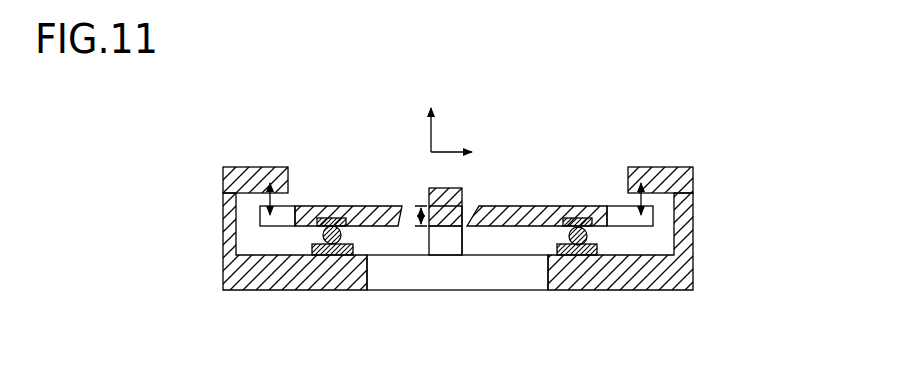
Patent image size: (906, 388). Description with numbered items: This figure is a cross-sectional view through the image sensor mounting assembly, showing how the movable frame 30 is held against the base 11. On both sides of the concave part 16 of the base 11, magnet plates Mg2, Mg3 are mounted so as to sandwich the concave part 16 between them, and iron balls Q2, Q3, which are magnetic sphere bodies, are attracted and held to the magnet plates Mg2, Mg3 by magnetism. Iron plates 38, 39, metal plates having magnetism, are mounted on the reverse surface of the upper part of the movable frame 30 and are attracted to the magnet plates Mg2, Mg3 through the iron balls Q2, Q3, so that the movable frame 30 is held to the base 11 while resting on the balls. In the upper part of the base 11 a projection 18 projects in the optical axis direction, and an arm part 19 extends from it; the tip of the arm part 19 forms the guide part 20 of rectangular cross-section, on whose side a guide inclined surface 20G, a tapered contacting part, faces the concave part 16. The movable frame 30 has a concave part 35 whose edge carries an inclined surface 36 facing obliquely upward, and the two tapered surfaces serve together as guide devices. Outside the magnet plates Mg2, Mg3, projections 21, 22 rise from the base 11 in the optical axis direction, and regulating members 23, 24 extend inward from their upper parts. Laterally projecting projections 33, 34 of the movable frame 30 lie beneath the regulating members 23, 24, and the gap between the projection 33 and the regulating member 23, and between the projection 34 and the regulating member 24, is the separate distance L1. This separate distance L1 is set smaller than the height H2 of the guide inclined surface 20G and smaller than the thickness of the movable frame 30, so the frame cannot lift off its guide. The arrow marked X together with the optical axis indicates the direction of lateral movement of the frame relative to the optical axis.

The base 11 is at (472, 228).
The concave part 16 is at (530, 275).
The projection 18 is at (441, 243).
The arm part 19 is at (452, 188).
The guide part 20 is at (456, 246).
The guide inclined surface 20G is at (462, 230).
The projection 21 is at (223, 238).
The projection 22 is at (693, 230).
The regulating member 23 is at (262, 167).
The regulating member 24 is at (670, 167).
The movable frame 30 is at (323, 218).
The projection 33 is at (278, 218).
The projection 34 is at (627, 208).
The concave part 35 is at (403, 205).
The inclined surface 36 is at (560, 174).
The iron plate 38 is at (320, 217).
The iron plate 39 is at (572, 218).
The magnet plate Mg2 is at (312, 250).
The magnet plate Mg3 is at (568, 252).
The iron ball Q2 is at (323, 242).
The iron ball Q3 is at (590, 240).
The separate distance L1 is at (236, 195).
The height of the guide inclined surface H2 is at (419, 217).
The X axis X is at (469, 115).